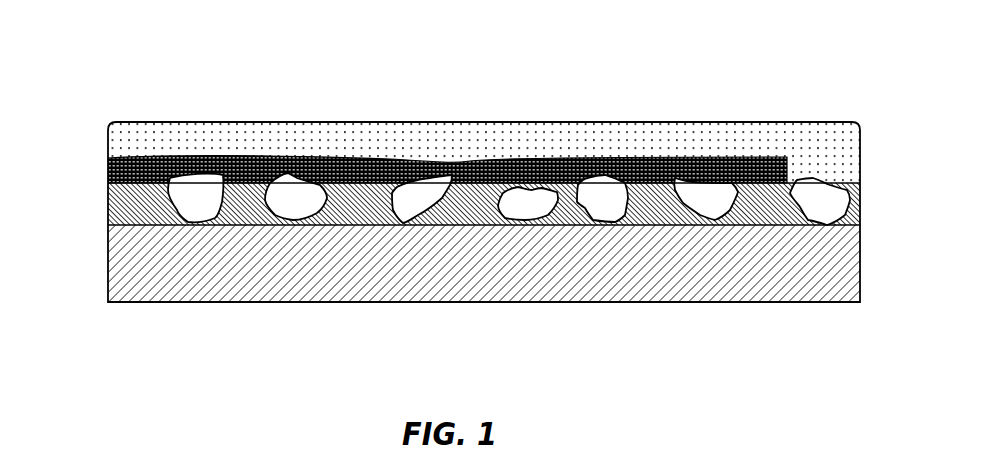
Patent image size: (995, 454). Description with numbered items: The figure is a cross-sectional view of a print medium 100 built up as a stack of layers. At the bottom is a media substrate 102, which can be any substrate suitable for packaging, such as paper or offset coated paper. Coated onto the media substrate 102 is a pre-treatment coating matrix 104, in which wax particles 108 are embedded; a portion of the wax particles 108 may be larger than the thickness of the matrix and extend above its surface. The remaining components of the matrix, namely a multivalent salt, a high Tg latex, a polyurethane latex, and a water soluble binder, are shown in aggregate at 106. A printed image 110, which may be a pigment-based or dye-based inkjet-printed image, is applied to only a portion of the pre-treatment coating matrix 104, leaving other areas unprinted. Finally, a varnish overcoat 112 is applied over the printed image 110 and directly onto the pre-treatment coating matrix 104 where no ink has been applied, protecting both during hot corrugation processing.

The print medium 100 is at (447, 199).
The media substrate 102 is at (243, 272).
The pre-treatment coating matrix 104 is at (447, 126).
The matrix components 106 is at (140, 207).
The wax particles 108 is at (518, 207).
The printed image 110 is at (565, 160).
The varnish overcoat 112 is at (762, 138).